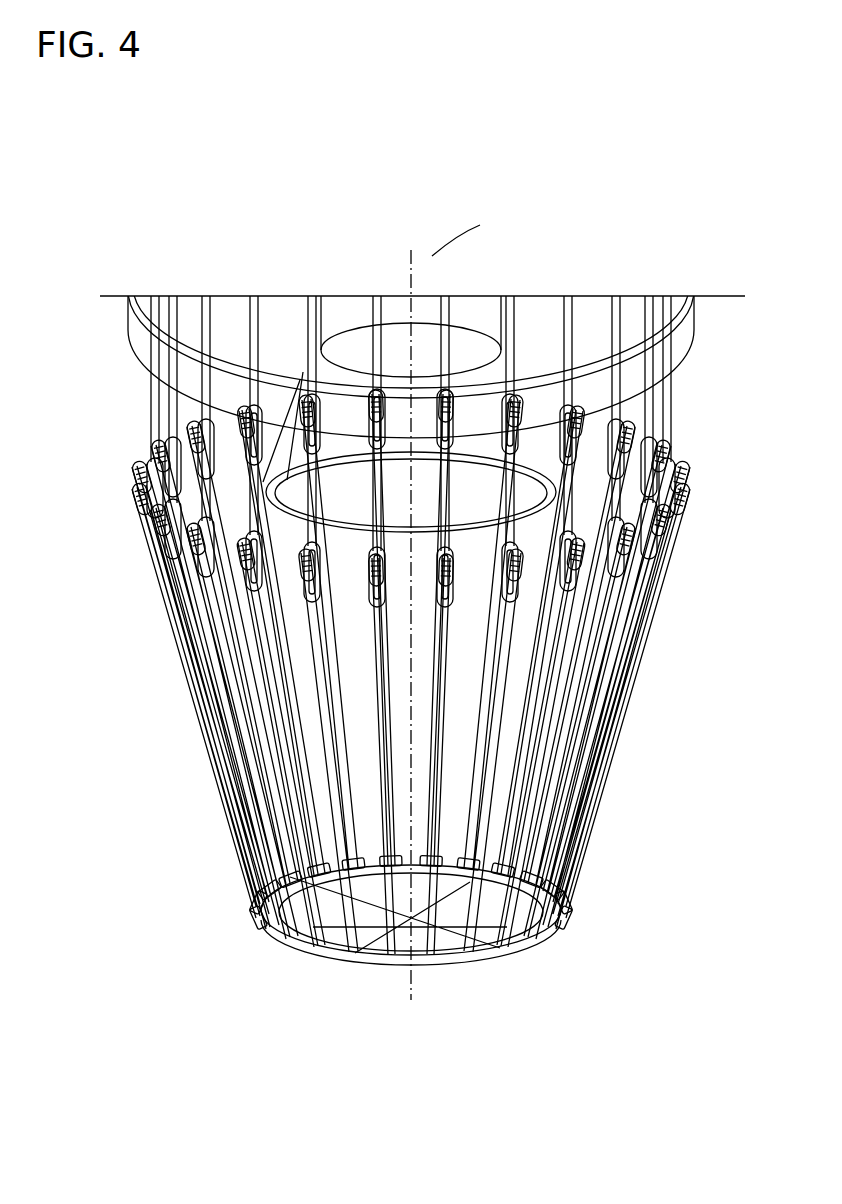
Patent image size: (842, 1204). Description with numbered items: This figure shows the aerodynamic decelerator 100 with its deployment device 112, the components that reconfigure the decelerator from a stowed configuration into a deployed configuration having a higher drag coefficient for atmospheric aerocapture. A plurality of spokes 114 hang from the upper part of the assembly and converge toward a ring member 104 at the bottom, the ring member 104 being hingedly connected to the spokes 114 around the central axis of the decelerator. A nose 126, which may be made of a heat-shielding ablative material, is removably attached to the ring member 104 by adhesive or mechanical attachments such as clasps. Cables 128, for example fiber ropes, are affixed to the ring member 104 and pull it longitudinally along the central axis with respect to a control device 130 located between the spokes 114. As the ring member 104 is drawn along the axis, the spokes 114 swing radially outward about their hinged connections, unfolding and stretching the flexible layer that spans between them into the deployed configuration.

The aerodynamic decelerator 100 is at (174, 256).
The ring member 104 is at (592, 905).
The deployment device 112 is at (689, 446).
The spokes 114 is at (638, 707).
The nose 126 is at (312, 930).
The cables 128 is at (478, 950).
The control device 130 is at (256, 490).